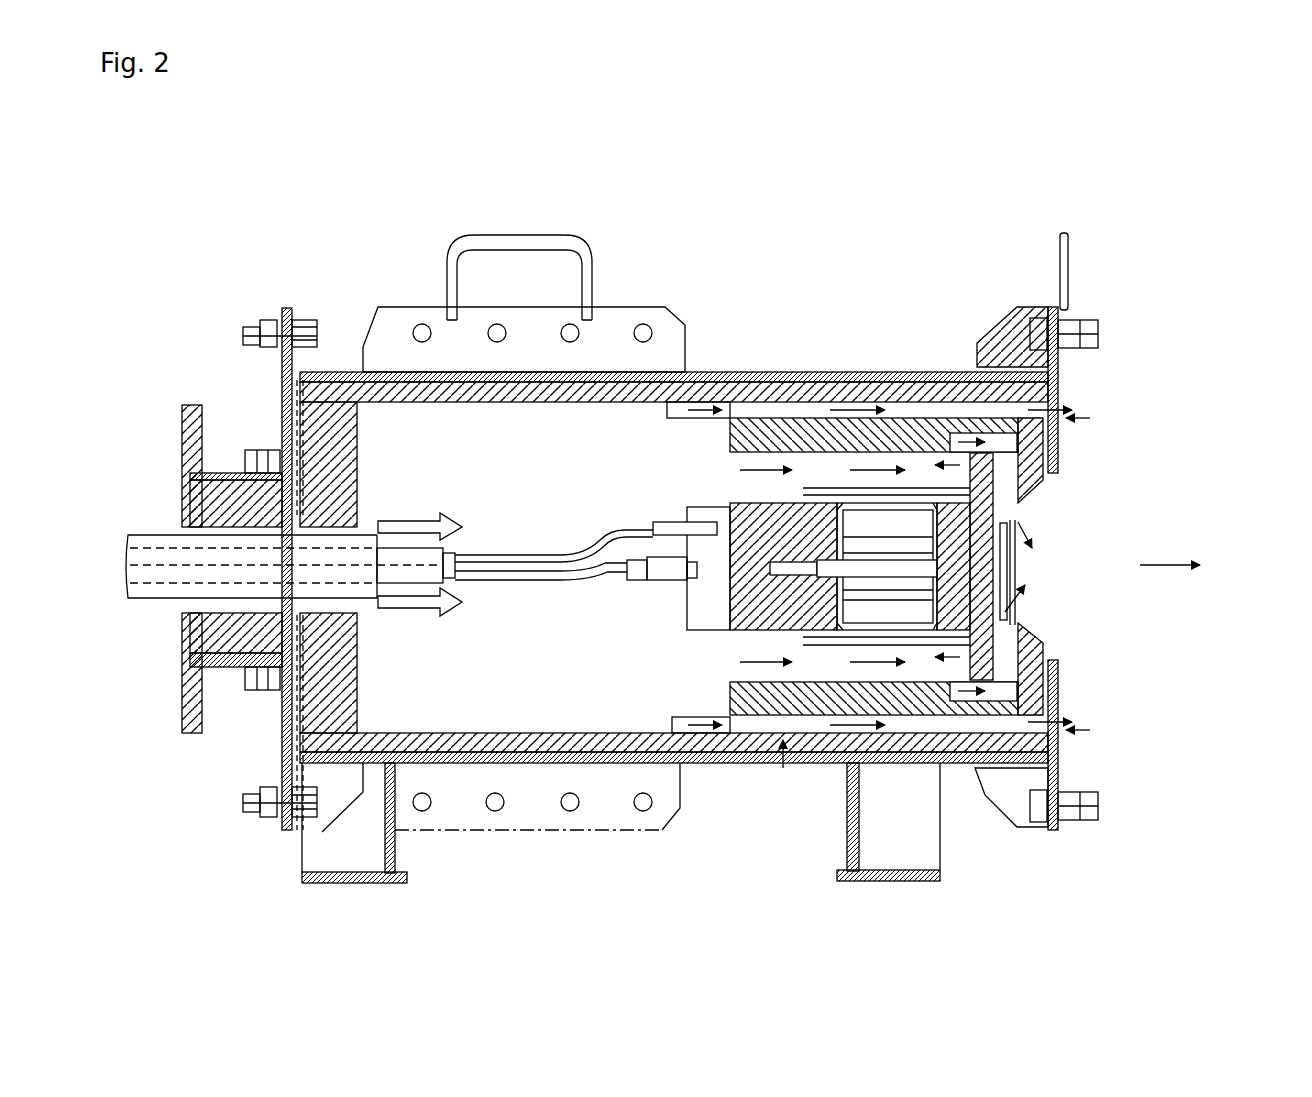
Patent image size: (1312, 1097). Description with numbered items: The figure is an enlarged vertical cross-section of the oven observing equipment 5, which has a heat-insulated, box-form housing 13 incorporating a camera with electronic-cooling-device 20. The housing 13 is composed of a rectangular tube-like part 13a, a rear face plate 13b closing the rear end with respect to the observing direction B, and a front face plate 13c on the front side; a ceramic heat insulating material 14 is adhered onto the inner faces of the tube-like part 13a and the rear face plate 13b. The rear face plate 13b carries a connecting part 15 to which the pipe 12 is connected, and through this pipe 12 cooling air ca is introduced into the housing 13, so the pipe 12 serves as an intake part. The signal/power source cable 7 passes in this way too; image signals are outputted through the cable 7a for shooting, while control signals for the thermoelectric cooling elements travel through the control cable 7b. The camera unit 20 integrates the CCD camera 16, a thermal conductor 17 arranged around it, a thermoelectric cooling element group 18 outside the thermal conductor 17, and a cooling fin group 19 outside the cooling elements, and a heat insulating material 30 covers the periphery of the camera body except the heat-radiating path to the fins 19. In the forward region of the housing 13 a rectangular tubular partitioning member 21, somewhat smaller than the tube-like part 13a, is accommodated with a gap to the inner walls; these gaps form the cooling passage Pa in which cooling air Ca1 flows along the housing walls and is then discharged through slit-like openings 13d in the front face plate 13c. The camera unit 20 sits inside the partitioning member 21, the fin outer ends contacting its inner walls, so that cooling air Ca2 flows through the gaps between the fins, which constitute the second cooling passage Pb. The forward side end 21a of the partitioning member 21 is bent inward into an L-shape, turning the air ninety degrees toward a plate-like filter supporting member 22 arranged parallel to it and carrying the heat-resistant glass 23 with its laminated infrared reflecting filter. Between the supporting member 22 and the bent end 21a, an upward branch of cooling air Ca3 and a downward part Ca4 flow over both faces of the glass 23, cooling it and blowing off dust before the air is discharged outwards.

The oven observing equipment 5 is at (788, 168).
The signal/power source cable 7 is at (391, 601).
The cable for shooting 7a is at (490, 582).
The control cable 7b is at (500, 558).
The pipe 12 is at (365, 601).
The heat-insulated housing 13 is at (731, 558).
The rectangular tube-like part 13a is at (765, 372).
The rear face plate 13b is at (282, 375).
The front face plate 13c is at (1062, 378).
The openings 13d is at (1080, 408).
The ceramic heat insulating material 14 is at (545, 402).
The connecting part 15 is at (182, 500).
The CCD camera 16 is at (800, 560).
The thermal conductor 17 is at (848, 505).
The thermoelectric cooling element group 18 is at (912, 500).
The cooling fin group 19 is at (925, 665).
The camera with electronic-cooling-device 20 is at (688, 642).
The rectangular tubular partitioning member 21 is at (870, 566).
The forward side end 21a is at (1040, 497).
The filter supporting member 22 is at (1012, 590).
The heat-resistant glass 23 is at (1020, 560).
The heat insulating material 30 is at (685, 527).
The cooling air ca is at (415, 520).
The cooling air ca1 Ca1 is at (870, 405).
The cooling air ca2 Ca2 is at (890, 665).
The cooling air ca3 Ca3 is at (1050, 682).
The cooling air ca4 Ca4 is at (1043, 530).
The cooling passage Pa is at (1000, 400).
The second cooling passage Pb is at (1000, 462).
The observing direction B is at (1183, 567).